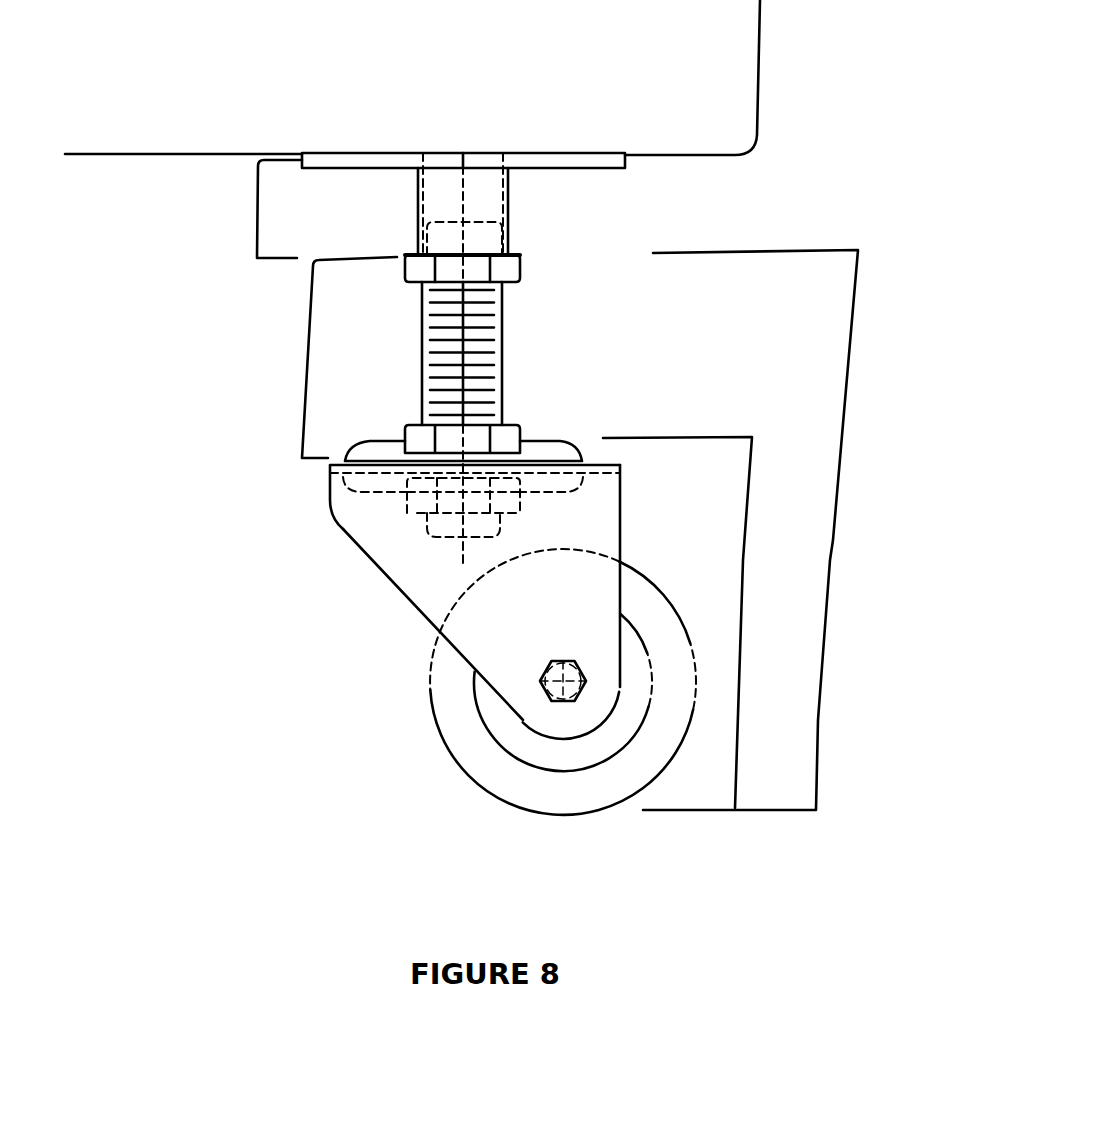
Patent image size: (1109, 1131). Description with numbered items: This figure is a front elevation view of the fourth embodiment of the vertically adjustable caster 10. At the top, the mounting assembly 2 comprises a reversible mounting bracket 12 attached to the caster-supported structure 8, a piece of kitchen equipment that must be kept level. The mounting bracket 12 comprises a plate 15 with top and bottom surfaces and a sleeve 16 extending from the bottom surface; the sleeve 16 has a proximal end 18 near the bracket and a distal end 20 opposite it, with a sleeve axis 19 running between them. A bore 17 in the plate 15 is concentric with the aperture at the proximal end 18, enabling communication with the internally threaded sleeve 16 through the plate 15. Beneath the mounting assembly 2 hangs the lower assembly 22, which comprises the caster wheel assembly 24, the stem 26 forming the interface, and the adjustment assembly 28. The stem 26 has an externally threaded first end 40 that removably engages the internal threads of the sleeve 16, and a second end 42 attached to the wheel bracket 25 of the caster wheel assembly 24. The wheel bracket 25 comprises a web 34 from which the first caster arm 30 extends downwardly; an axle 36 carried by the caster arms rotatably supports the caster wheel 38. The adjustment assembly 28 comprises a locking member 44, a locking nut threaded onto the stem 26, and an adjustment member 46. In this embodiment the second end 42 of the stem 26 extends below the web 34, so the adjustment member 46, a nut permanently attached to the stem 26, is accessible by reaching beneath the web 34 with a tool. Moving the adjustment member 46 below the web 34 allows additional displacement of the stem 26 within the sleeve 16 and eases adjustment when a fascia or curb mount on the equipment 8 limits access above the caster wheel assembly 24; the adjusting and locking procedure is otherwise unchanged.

The caster-supported structure 8 is at (723, 68).
The plate 15 is at (353, 157).
The mounting bracket 12 is at (537, 160).
The sleeve axis 19 is at (463, 150).
The bore 17 is at (473, 157).
The proximal end 18 is at (413, 170).
The sleeve 16 is at (477, 200).
The first end 40 is at (493, 240).
The mounting assembly 2 is at (253, 212).
The distal end 20 is at (427, 263).
The locking member 44 is at (518, 267).
The stem 26 is at (502, 328).
The adjustment assembly 28 is at (305, 362).
The web 34 is at (590, 461).
The adjustment member 46 is at (410, 512).
The second end 42 is at (480, 525).
The wheel bracket 25 is at (618, 535).
The first caster arm 30 is at (428, 592).
The axle 36 is at (552, 695).
The caster wheel 38 is at (515, 805).
The lower assembly 22 is at (836, 512).
The caster wheel assembly 24 is at (742, 610).
The caster 10 is at (257, 503).